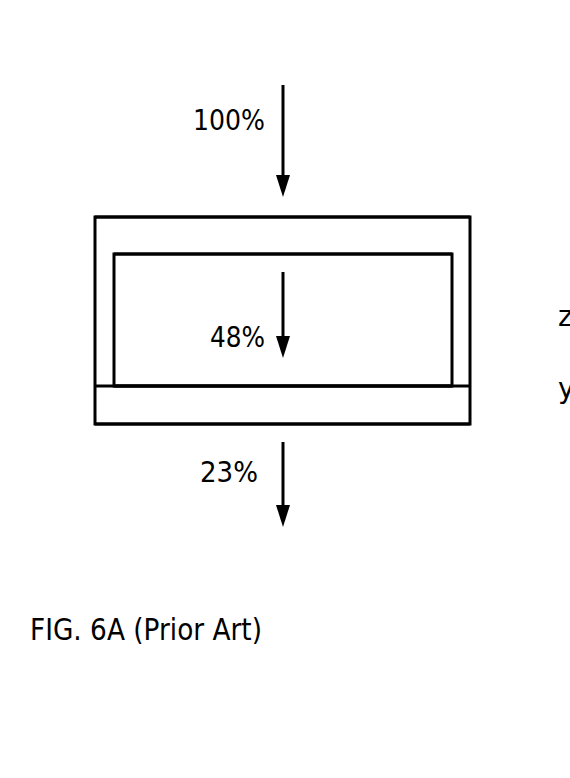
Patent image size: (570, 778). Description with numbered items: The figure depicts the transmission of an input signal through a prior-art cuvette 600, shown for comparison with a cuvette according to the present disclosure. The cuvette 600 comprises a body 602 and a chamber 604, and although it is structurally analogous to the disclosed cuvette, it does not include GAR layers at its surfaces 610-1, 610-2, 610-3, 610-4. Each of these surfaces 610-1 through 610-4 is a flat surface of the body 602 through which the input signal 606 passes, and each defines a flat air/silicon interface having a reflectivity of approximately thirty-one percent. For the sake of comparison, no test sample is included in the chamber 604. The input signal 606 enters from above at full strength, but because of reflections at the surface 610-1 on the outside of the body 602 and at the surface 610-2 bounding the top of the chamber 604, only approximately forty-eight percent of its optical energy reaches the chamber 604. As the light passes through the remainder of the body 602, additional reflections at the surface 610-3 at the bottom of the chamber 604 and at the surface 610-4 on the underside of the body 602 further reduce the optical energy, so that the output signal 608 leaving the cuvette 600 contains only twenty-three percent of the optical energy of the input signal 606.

The cuvette 600 is at (106, 96).
The body 602 is at (395, 233).
The chamber 604 is at (413, 293).
The input signal 606 is at (340, 48).
The output signal 608 is at (285, 480).
The surface 610-1 is at (142, 213).
The surface 610-2 is at (198, 260).
The surface 610-3 is at (338, 383).
The surface 610-4 is at (377, 429).